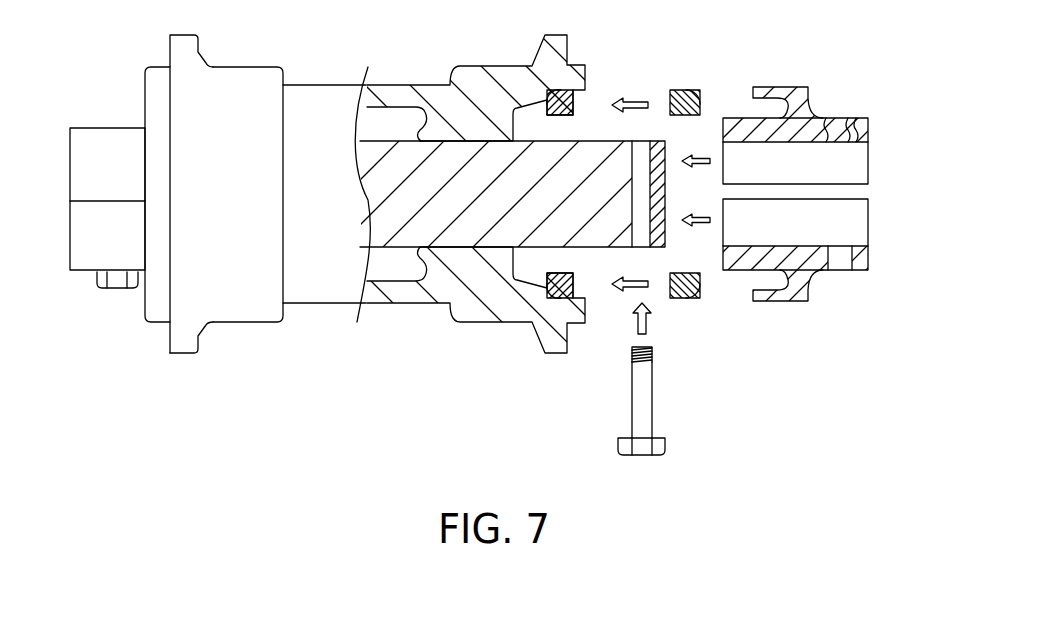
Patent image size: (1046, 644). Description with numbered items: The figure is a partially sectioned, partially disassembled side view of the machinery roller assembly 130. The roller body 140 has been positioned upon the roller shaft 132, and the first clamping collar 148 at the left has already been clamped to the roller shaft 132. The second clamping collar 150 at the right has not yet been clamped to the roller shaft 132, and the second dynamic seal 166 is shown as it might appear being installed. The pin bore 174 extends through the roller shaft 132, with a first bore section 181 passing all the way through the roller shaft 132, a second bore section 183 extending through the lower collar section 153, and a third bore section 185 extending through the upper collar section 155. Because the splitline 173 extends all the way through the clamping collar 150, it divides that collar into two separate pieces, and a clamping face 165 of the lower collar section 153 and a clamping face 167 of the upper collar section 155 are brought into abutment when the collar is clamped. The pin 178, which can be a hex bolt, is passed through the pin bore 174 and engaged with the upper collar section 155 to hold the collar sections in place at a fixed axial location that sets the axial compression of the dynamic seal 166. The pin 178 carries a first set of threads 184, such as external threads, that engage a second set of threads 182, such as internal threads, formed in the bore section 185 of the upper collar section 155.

The roller assembly 130 is at (730, 200).
The roller shaft 132 is at (455, 155).
The roller body 140 is at (452, 303).
The first clamping collar 148 is at (70, 272).
The second clamping collar 150 is at (730, 200).
The lower collar section 153 is at (793, 301).
The upper collar section 155 is at (813, 103).
The clamping face 165 is at (830, 200).
The second dynamic seal 166 is at (688, 78).
The clamping face 167 is at (840, 183).
The splitline 173 is at (815, 198).
The pin bore 174 is at (634, 224).
The pin 178 is at (641, 394).
The first bore section 181 is at (647, 161).
The second set of threads 182 is at (850, 118).
The second bore section 183 is at (842, 271).
The first set of threads 184 is at (652, 350).
The third bore section 185 is at (857, 118).